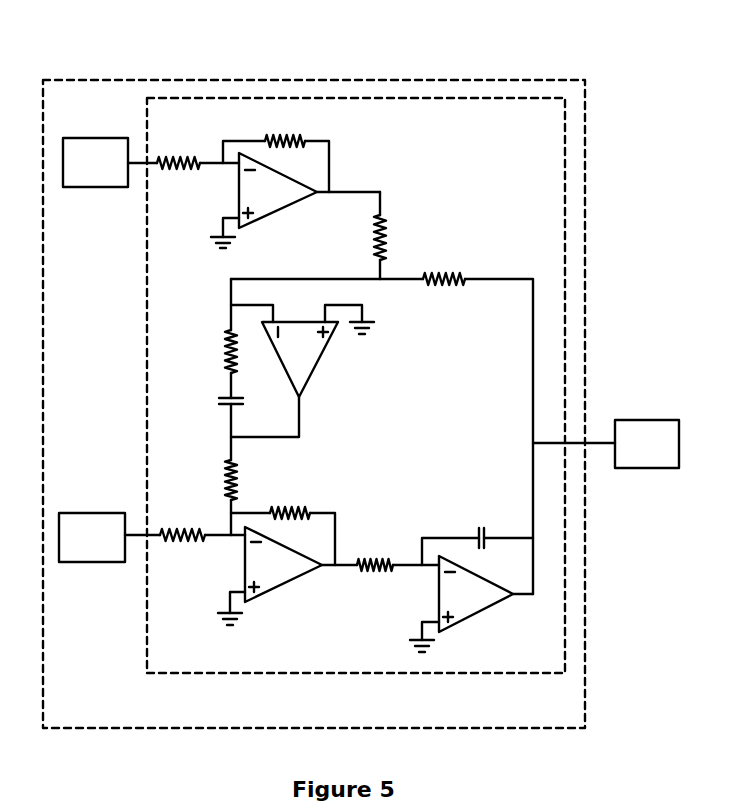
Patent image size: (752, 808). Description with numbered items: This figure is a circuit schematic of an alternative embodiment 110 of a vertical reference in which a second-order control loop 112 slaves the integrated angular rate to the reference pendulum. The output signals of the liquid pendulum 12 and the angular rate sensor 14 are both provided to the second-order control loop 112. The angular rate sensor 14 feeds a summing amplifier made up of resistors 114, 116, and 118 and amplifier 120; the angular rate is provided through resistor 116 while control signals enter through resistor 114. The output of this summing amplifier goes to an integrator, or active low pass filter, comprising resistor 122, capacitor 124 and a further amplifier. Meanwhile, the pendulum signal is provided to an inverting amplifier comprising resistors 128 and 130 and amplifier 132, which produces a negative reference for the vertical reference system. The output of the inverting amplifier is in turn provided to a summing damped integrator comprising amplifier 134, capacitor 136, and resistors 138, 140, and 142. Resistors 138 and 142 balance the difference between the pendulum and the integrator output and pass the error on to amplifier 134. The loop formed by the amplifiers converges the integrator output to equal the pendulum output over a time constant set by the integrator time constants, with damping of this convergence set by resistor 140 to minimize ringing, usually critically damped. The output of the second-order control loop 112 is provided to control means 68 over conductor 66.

The alternative embodiment of a vertical reference 110 is at (333, 77).
The second-order control loop 112 is at (140, 118).
The liquid pendulum 12 is at (103, 190).
The angular rate sensor 14 is at (103, 510).
The control means 68 is at (655, 413).
The conductor 66 is at (590, 447).
The resistor 128 is at (172, 168).
The resistor 130 is at (292, 132).
The amplifier 132 is at (275, 208).
The resistor 138 is at (387, 237).
The resistor 142 is at (445, 268).
The resistor 140 is at (220, 357).
The capacitor 136 is at (217, 404).
The amplifier 134 is at (313, 374).
The resistor 114 is at (243, 467).
The resistor 116 is at (183, 545).
The resistor 118 is at (295, 505).
The amplifier 120 is at (290, 583).
The resistor 122 is at (375, 550).
The capacitor 124 is at (478, 520).